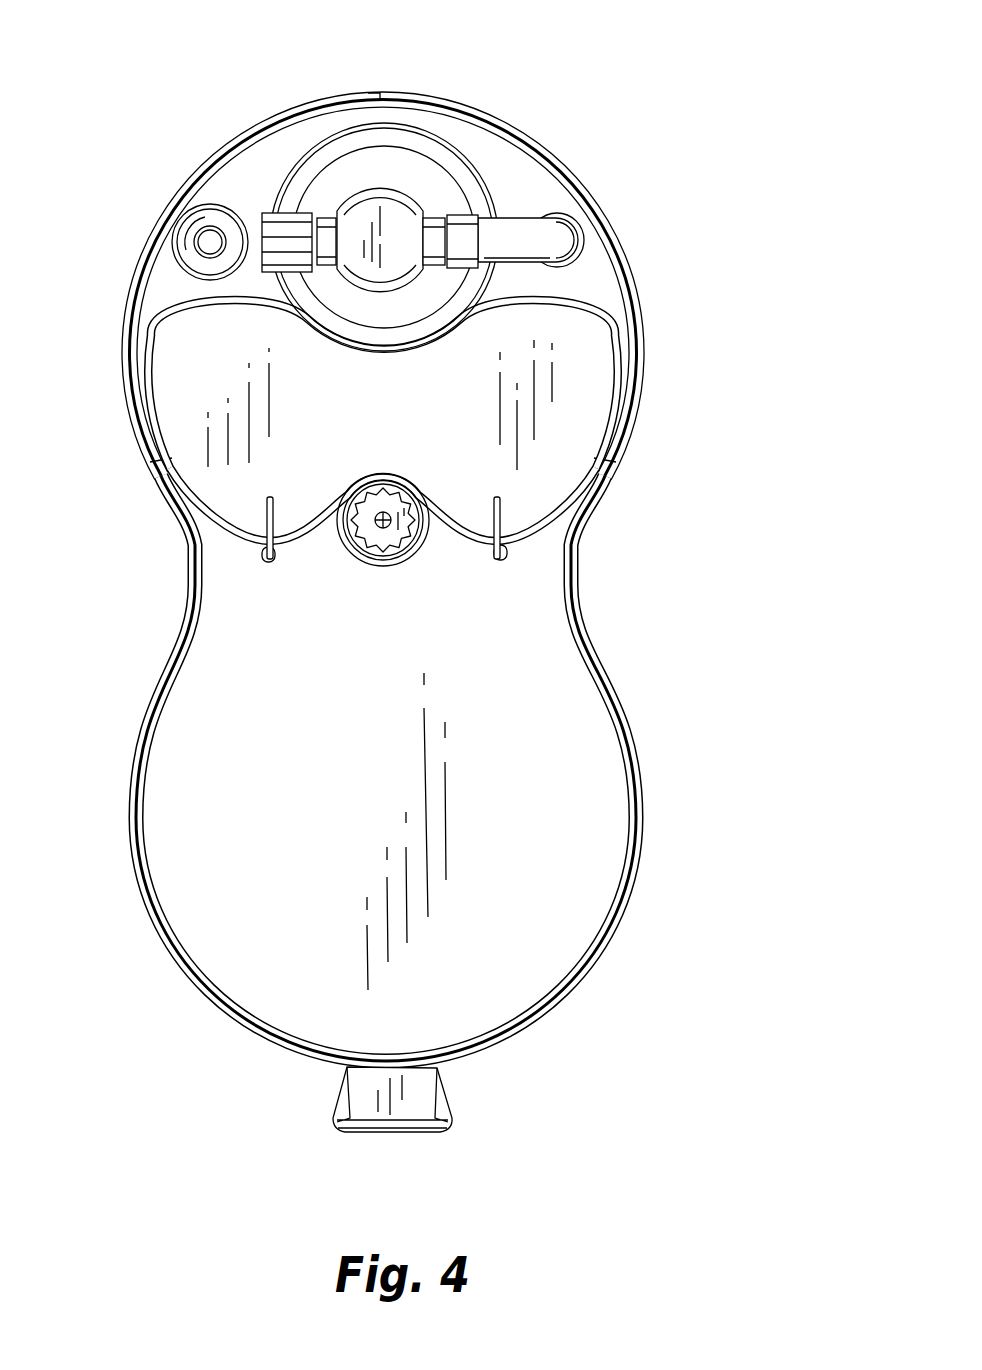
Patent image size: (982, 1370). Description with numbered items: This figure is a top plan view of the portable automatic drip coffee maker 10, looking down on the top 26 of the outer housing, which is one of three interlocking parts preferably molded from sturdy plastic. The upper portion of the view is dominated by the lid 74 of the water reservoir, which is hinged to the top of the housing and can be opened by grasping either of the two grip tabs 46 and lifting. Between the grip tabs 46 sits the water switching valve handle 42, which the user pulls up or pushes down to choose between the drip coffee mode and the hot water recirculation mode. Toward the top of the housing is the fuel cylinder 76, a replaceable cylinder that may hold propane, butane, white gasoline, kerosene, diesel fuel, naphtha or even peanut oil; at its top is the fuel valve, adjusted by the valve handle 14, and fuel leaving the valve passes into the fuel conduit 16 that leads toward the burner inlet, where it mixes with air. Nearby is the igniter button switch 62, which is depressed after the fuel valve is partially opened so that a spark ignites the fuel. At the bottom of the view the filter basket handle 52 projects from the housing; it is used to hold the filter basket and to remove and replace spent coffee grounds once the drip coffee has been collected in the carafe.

The portable automatic drip coffee maker 10 is at (757, 92).
The valve handle 14 is at (283, 215).
The fuel conduit 16 is at (520, 228).
The top 26 is at (338, 811).
The water switching valve handle 42 is at (372, 532).
The grip tabs 46 is at (263, 556).
The filter basket handle 52 is at (452, 1133).
The igniter button switch 62 is at (205, 245).
The lid 74 is at (592, 410).
The fuel cylinder 76 is at (405, 165).